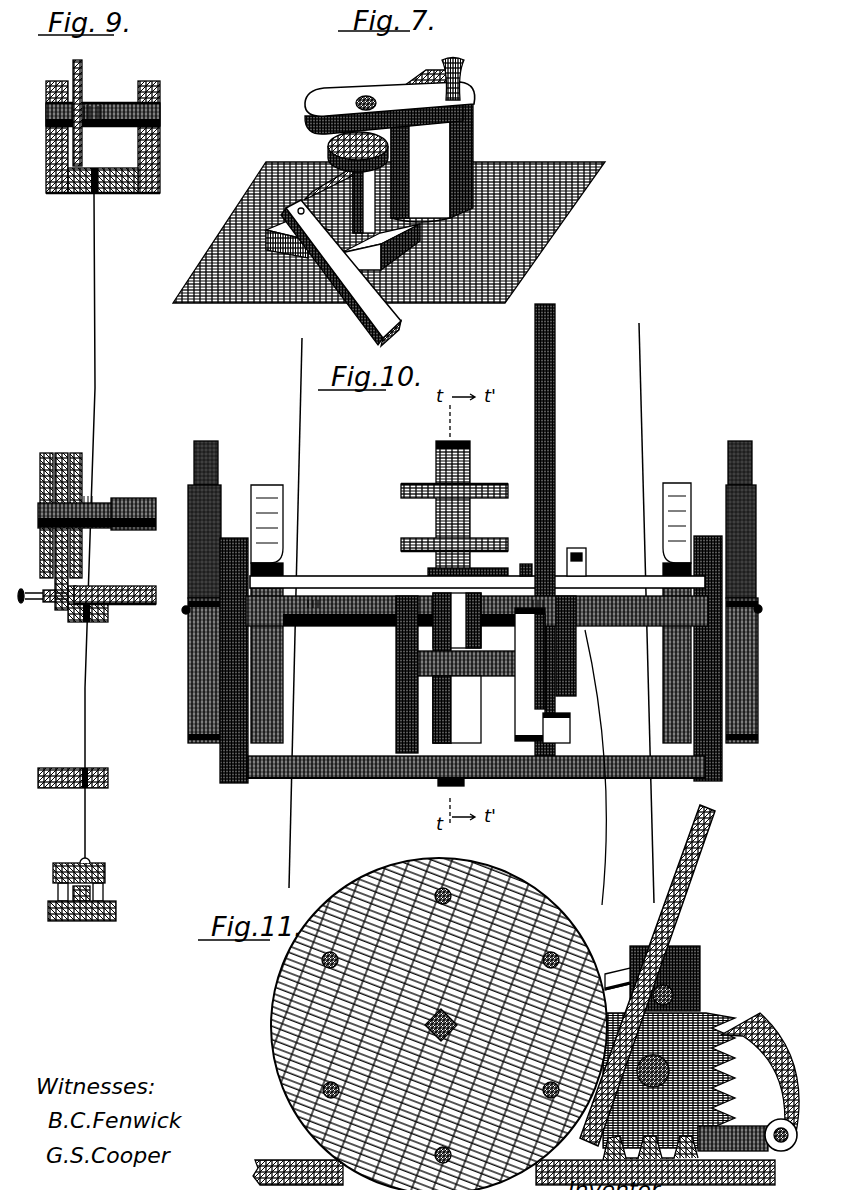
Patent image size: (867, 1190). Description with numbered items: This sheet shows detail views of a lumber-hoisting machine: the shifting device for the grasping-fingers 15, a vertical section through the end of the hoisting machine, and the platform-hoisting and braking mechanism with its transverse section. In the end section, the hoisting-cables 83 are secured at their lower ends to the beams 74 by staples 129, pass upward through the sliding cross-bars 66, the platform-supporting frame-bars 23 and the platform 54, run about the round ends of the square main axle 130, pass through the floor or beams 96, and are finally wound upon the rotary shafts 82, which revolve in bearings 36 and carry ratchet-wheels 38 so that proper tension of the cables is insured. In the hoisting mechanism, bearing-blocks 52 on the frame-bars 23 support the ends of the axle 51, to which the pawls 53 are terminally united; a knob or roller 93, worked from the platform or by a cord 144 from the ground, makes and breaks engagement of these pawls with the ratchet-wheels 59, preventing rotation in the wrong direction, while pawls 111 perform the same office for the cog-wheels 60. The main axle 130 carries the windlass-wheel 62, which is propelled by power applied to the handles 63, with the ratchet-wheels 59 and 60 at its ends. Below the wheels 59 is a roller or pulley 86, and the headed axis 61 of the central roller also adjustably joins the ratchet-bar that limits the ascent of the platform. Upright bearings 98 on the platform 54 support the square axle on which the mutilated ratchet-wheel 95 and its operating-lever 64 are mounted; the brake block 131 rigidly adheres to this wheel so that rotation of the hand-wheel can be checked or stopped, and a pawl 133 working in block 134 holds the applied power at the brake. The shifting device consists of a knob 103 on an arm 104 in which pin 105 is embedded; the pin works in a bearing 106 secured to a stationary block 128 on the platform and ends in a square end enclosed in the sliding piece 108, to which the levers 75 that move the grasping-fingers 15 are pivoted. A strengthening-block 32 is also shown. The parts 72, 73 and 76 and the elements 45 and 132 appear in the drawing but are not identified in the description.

In FIG. 9, the bearings 36 is at (38, 84).
In FIG. 9, the ratchet-wheels 38 is at (74, 58).
In FIG. 9, the rotary shafts 82 is at (111, 96).
In FIG. 9, the hoisting-cables 83 is at (82, 97).
In FIG. 10, the hoisting-cables 83 is at (287, 456).
In FIG. 9, the floor or beams 96 is at (100, 186).
In FIG. 9, the ratchet-wheels 59 is at (34, 446).
In FIG. 10, the ratchet-wheels 59 is at (190, 741).
In FIG. 9, the bearing-blocks 52 is at (54, 446).
In FIG. 10, the bearing-blocks 52 is at (224, 531).
In FIG. 11, the bearing-blocks 52 is at (692, 957).
In FIG. 9, the ratchet-wheels 60 is at (69, 446).
In FIG. 10, the ratchet-wheels 60 is at (276, 695).
In FIG. 9, the square main axle 130 is at (126, 498).
In FIG. 10, the square main axle 130 is at (180, 618).
In FIG. 9, the platform 54 is at (120, 580).
In FIG. 7, the platform 54 is at (389, 232).
In FIG. 10, the platform 54 is at (476, 772).
In FIG. 11, the platform 54 is at (514, 1173).
In FIG. 9, the frame-bars 23 is at (100, 607).
In FIG. 9, the headed axis 61 is at (14, 598).
In FIG. 9, the roller or pulley 86 is at (40, 596).
In FIG. 9, the sliding cross-bars 66 is at (100, 763).
In FIG. 9, the beams 74 is at (97, 864).
In FIG. 9, the staples 129 is at (76, 853).
In FIG. 9, the rollers 73 is at (50, 886).
In FIG. 9, the plate 76 is at (108, 908).
In FIG. 9, the base 72 is at (45, 906).
In FIG. 7, the knob 103 is at (462, 62).
In FIG. 7, the arm 104 is at (390, 102).
In FIG. 7, the pin 105 is at (362, 87).
In FIG. 7, the bearing 106 is at (360, 182).
In FIG. 7, the stationary block 128 is at (432, 161).
In FIG. 7, the sliding piece 108 is at (380, 247).
In FIG. 7, the levers 75 is at (341, 273).
In FIG. 7, the grasping-fingers 15 is at (339, 179).
In FIG. 7, the pawls 111 is at (302, 235).
In FIG. 10, the pawls 111 is at (262, 480).
In FIG. 10, the pawls 53 is at (210, 453).
In FIG. 11, the pawls 53 is at (600, 966).
In FIG. 10, the axle 51 is at (313, 575).
In FIG. 11, the axle 51 is at (692, 991).
In FIG. 10, the windlass-wheel 62 is at (420, 803).
In FIG. 11, the windlass-wheel 62 is at (439, 1024).
In FIG. 10, the handles 63 is at (482, 488).
In FIG. 11, the handles 63 is at (331, 950).
In FIG. 10, the operating-lever 64 is at (547, 404).
In FIG. 11, the operating-lever 64 is at (690, 864).
In FIG. 10, the knob or roller 93 is at (578, 549).
In FIG. 10, the mutilated ratchet-wheel 95 is at (521, 566).
In FIG. 10, the upright bearings 98 is at (489, 674).
In FIG. 11, the upright bearings 98 is at (692, 1148).
In FIG. 10, the brake block 131 is at (468, 668).
In FIG. 10, the sleeve 132 is at (457, 709).
In FIG. 10, the pawl 133 is at (531, 674).
In FIG. 11, the pawl 133 is at (790, 1064).
In FIG. 10, the block 134 is at (562, 736).
In FIG. 11, the block 134 is at (790, 1141).
In FIG. 10, the cord 144 is at (606, 818).
In FIG. 11, the ratchet wheel 45 is at (669, 1086).
In FIG. 11, the strengthening-block 32 is at (653, 1071).